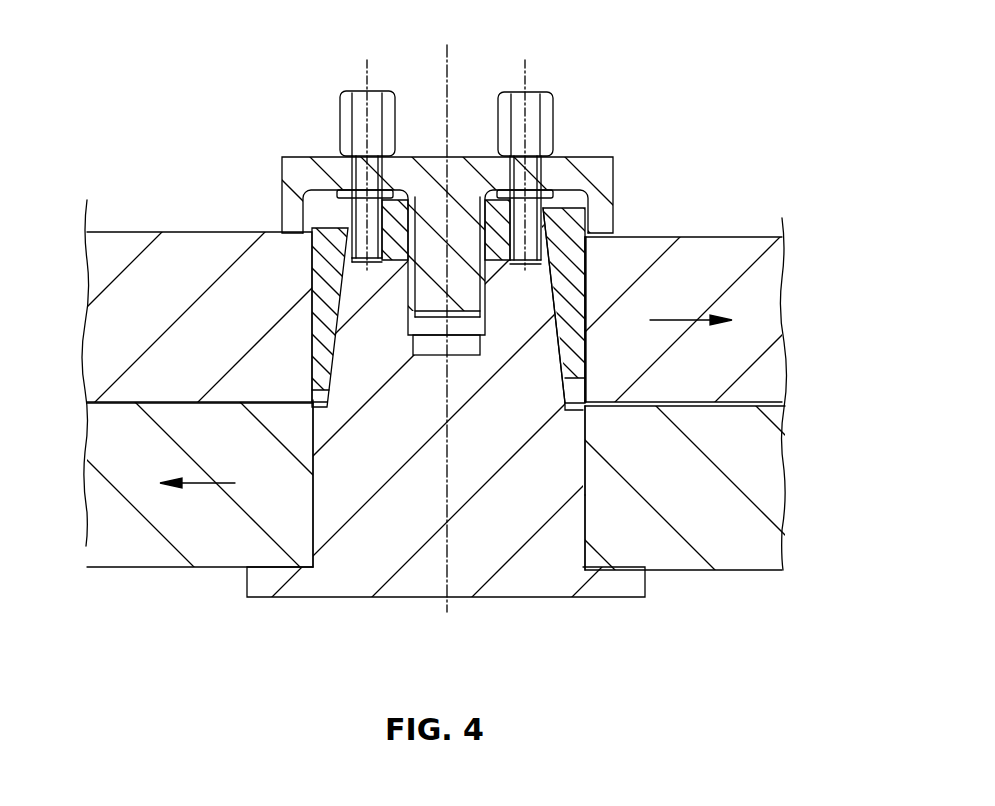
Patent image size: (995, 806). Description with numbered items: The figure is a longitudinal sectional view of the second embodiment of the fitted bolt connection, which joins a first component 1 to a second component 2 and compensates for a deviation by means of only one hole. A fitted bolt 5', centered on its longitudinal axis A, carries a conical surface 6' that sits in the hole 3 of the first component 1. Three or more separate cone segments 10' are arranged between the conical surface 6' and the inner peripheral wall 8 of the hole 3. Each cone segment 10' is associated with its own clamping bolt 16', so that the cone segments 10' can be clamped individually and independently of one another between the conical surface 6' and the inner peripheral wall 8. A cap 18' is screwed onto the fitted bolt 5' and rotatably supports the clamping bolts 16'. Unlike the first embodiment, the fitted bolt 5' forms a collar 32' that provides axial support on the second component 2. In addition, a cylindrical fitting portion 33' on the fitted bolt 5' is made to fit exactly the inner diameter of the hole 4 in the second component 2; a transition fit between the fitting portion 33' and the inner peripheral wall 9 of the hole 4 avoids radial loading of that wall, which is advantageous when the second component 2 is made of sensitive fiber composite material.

The first component 1 is at (206, 363).
The second component 2 is at (706, 485).
The hole 3 is at (590, 322).
The hole 4 is at (585, 478).
The fitted bolt 5' is at (497, 400).
The conical surface 6' is at (606, 209).
The inner peripheral wall 8 is at (585, 290).
The inner peripheral wall 9 is at (585, 510).
The cone segments 10' is at (497, 400).
The clamping bolt 16' is at (445, 143).
The cap 18' is at (548, 400).
The collar 32' is at (331, 606).
The cylindrical fitting portion 33' is at (165, 485).
The longitudinal axis A is at (445, 505).